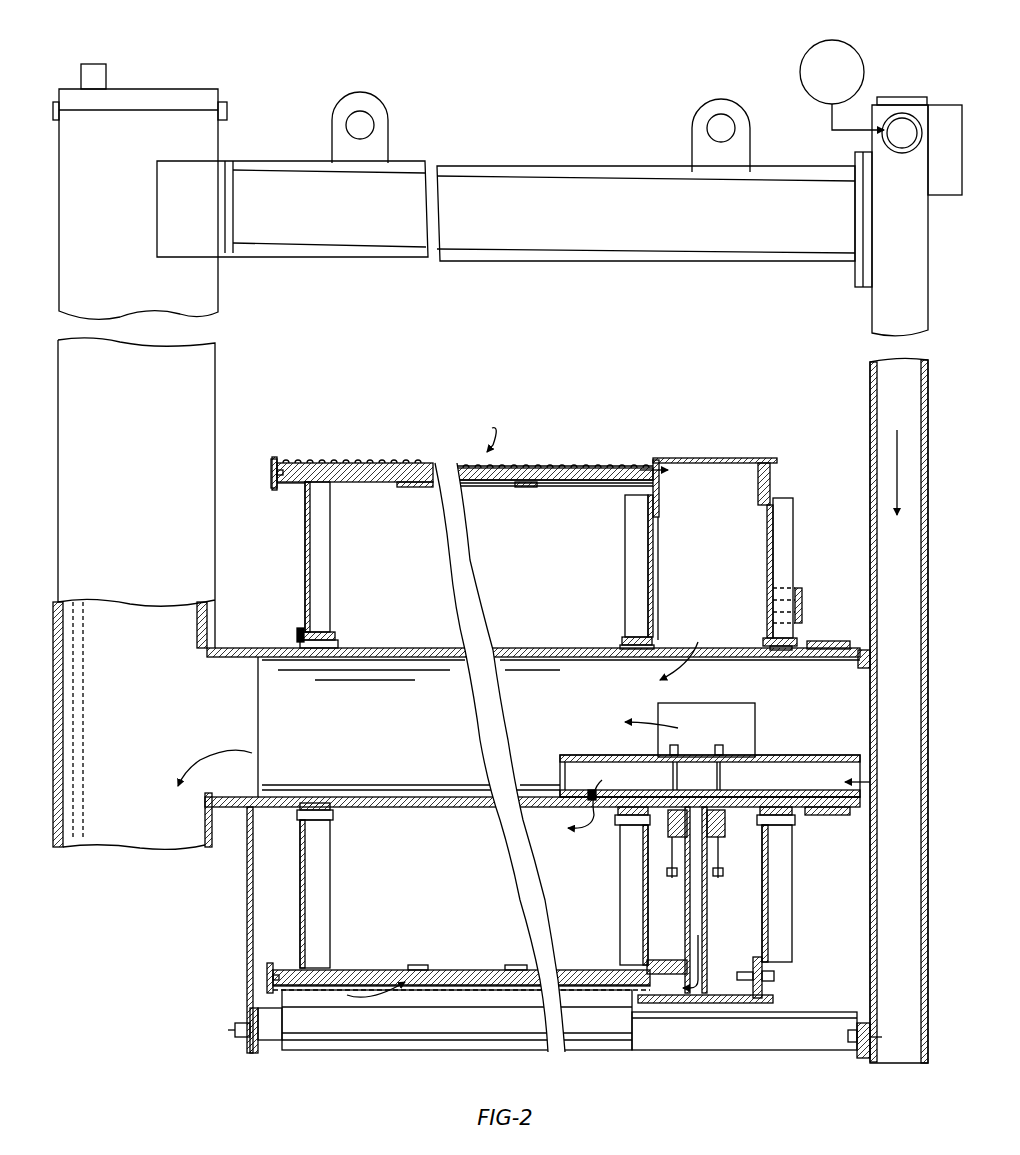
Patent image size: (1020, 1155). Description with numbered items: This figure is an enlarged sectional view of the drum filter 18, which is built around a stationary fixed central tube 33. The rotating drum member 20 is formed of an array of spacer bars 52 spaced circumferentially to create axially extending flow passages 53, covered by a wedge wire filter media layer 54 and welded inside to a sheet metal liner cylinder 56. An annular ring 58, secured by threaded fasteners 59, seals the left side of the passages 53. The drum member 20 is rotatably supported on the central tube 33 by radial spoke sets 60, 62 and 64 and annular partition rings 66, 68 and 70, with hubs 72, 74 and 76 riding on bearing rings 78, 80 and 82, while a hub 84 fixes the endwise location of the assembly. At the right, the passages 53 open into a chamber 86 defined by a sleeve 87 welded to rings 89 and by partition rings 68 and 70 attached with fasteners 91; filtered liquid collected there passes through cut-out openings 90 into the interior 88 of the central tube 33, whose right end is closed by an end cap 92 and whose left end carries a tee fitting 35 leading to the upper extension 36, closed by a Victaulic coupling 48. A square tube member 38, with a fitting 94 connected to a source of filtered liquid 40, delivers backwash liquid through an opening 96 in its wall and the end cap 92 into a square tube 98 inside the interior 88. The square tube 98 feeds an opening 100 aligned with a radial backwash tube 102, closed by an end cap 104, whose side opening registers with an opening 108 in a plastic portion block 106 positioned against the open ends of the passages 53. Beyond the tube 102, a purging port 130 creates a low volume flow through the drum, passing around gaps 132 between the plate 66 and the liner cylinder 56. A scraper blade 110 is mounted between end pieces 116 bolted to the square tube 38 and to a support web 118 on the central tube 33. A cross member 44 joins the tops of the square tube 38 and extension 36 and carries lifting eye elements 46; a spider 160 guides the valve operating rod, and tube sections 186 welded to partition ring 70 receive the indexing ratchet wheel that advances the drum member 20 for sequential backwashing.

The drum filter 18 is at (485, 430).
The drum member 20 is at (362, 462).
The fixed central tube 33 is at (428, 630).
The tee fitting 35 is at (152, 724).
The upper extension 36 is at (217, 352).
The square tube member 38 is at (869, 412).
The source of filtered liquid 40 is at (800, 72).
The cross member 44 is at (505, 160).
The lifting eye elements 46 is at (332, 128).
The Victaulic coupling 48 is at (180, 86).
The spacer bars 52 is at (613, 467).
The axially extending flow passages 53 is at (497, 481).
The filter media layer 54 is at (533, 467).
The liner cylinder 56 is at (570, 486).
The annular ring 58 is at (274, 458).
The threaded fasteners 59 is at (270, 468).
The radial spoke set 60 is at (332, 570).
The radial spoke set 62 is at (625, 553).
The radial spoke set 64 is at (795, 528).
The annular partition ring 66 is at (305, 566).
The annular partition ring 68 is at (653, 608).
The annular partition ring 70 is at (767, 572).
The hub 72 is at (332, 632).
The hub 74 is at (628, 637).
The hub 76 is at (765, 638).
The bearing ring 78 is at (340, 645).
The bearing ring 80 is at (620, 647).
The bearing ring 82 is at (792, 647).
The hub 84 is at (297, 628).
The chamber 86 is at (668, 555).
The sleeve 87 is at (720, 458).
The interior of the fixed central tube 88 is at (559, 727).
The rings 89 is at (660, 502).
The cut-out openings 90 is at (733, 703).
The fasteners 91 is at (776, 978).
The end cap 92 is at (870, 660).
The fitting 94 is at (900, 118).
The opening 96 is at (870, 790).
The square tube 98 is at (806, 758).
The opening 100 is at (703, 806).
The backwash tube 102 is at (707, 905).
The end cap 104 is at (700, 978).
The plastic portion block 106 is at (668, 960).
The opening 108 is at (660, 1003).
The scraper blade 110 is at (402, 995).
The end pieces 116 is at (255, 1053).
The support web 118 is at (247, 903).
The purging port 130 is at (583, 821).
The gaps 132 is at (285, 488).
The spider 160 is at (820, 818).
The tube sections 186 is at (802, 600).